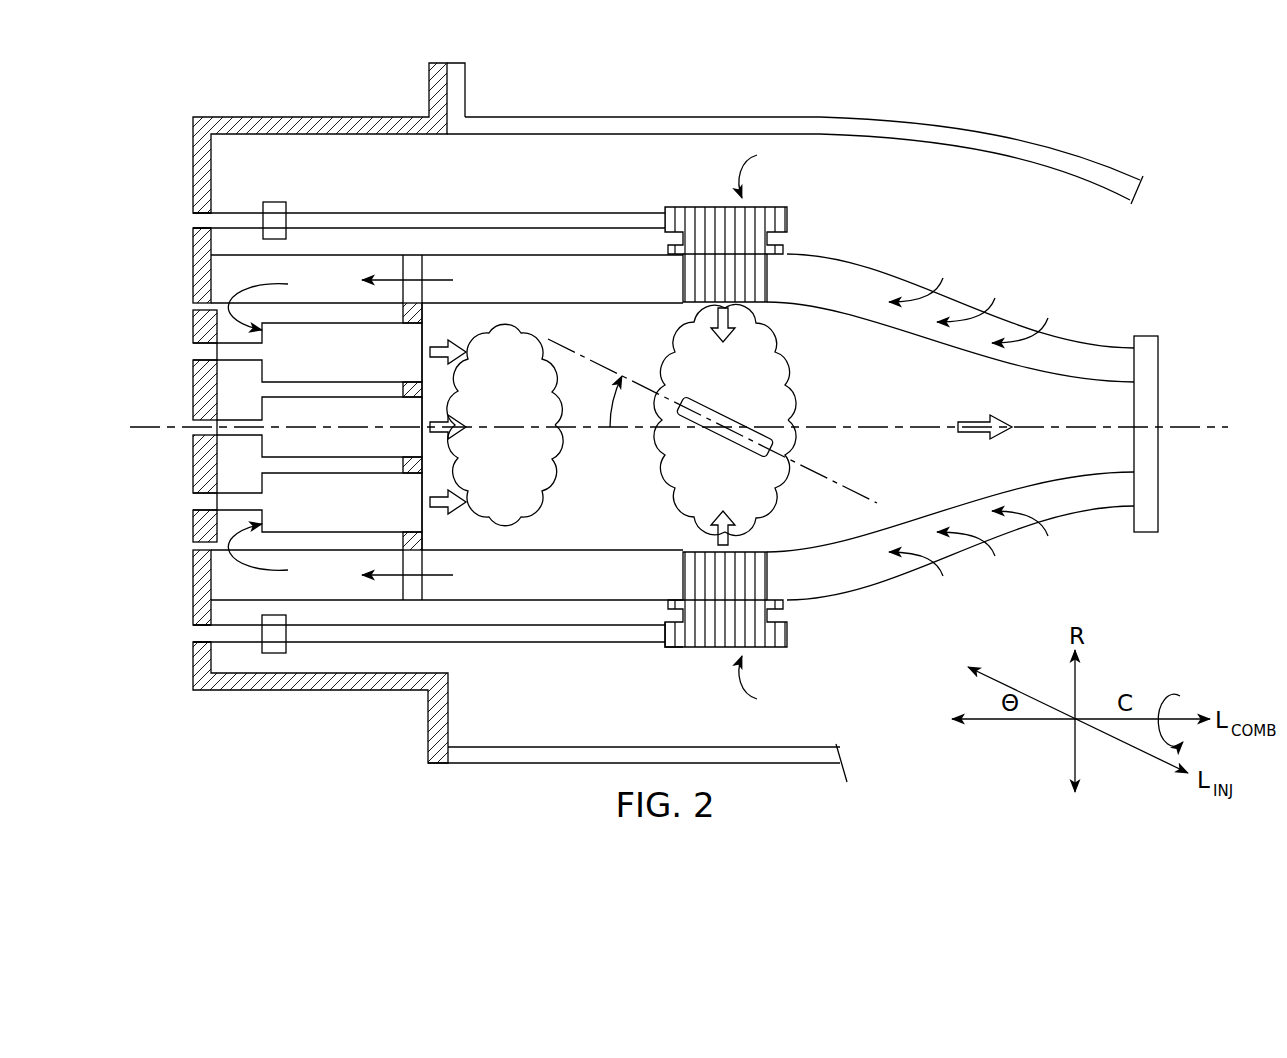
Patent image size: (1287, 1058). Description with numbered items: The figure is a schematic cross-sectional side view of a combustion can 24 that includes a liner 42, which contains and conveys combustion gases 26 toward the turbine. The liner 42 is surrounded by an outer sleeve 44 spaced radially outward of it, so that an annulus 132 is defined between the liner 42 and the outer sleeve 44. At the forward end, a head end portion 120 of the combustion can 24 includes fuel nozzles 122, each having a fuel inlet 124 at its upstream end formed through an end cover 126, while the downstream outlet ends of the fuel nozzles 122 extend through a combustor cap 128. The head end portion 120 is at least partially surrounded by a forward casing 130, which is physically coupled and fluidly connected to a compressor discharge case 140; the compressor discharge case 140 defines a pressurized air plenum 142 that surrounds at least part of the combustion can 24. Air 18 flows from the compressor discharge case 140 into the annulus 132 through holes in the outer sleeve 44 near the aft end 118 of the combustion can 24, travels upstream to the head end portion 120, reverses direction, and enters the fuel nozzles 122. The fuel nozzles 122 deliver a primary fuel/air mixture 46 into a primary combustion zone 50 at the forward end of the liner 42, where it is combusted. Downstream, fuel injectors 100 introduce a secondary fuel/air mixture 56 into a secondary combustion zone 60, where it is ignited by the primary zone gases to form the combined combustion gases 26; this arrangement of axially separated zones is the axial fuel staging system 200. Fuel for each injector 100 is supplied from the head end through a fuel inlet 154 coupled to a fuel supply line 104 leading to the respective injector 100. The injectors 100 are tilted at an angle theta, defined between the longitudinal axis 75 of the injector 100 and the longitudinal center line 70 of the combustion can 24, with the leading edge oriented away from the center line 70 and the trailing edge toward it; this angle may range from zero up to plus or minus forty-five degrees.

The combustion can 24 is at (290, 406).
The forward casing 130 is at (326, 126).
The fuel supply line 104 is at (424, 212).
The fuel inlet 154 is at (195, 220).
The annulus 132 is at (544, 291).
The end cover 126 is at (193, 460).
The fuel inlet 124 is at (193, 353).
The head end portion 120 is at (319, 540).
The fuel nozzle 122 is at (314, 363).
The combustor cap 128 is at (425, 547).
The liner 42 is at (573, 549).
The fuel injector 100 is at (795, 229).
The compressor discharge case 140 is at (941, 128).
The pressurized air plenum 142 is at (999, 218).
The aft end 118 is at (1145, 334).
The longitudinal center line 70 is at (1215, 425).
The primary combustion zone 50 is at (490, 413).
The secondary combustion zone 60 is at (718, 391).
The longitudinal axis 75 is at (838, 482).
The primary fuel/air mixture 46 is at (445, 335).
The secondary fuel/air mixture 56 is at (738, 312).
The combustion gases 26 is at (966, 414).
The outer sleeve 44 is at (918, 290).
The air 18 is at (440, 280).
The axial fuel staging system 200 is at (657, 650).